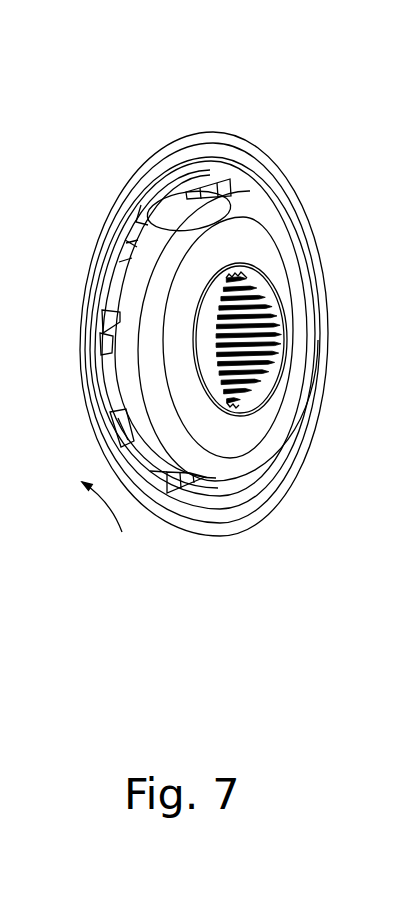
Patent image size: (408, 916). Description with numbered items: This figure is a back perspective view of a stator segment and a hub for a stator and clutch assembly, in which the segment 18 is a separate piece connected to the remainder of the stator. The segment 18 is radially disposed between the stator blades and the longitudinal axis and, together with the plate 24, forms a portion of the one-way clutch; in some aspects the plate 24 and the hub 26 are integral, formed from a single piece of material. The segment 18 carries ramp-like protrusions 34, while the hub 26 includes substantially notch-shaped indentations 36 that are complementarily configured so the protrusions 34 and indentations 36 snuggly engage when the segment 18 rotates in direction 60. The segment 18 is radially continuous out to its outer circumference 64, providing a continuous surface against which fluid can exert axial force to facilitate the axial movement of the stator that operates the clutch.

The segment 18 is at (172, 142).
The plate 24 is at (150, 443).
The hub 26 is at (293, 298).
The ramp-like protrusions 34 is at (120, 312).
The indentations 36 is at (157, 222).
The direction 60 is at (103, 517).
The outer circumference 64 is at (270, 503).